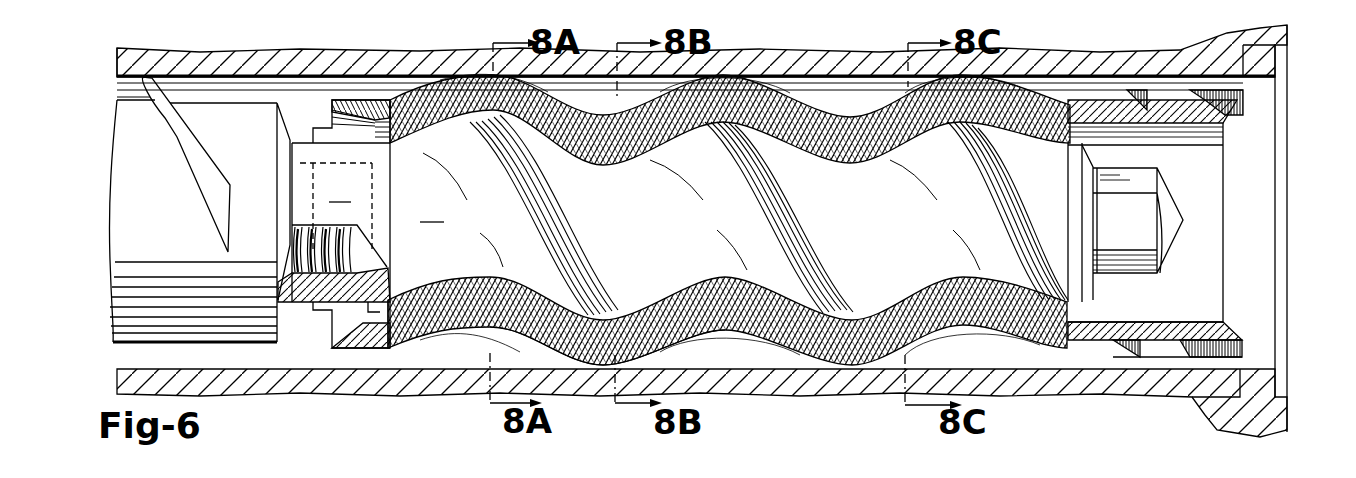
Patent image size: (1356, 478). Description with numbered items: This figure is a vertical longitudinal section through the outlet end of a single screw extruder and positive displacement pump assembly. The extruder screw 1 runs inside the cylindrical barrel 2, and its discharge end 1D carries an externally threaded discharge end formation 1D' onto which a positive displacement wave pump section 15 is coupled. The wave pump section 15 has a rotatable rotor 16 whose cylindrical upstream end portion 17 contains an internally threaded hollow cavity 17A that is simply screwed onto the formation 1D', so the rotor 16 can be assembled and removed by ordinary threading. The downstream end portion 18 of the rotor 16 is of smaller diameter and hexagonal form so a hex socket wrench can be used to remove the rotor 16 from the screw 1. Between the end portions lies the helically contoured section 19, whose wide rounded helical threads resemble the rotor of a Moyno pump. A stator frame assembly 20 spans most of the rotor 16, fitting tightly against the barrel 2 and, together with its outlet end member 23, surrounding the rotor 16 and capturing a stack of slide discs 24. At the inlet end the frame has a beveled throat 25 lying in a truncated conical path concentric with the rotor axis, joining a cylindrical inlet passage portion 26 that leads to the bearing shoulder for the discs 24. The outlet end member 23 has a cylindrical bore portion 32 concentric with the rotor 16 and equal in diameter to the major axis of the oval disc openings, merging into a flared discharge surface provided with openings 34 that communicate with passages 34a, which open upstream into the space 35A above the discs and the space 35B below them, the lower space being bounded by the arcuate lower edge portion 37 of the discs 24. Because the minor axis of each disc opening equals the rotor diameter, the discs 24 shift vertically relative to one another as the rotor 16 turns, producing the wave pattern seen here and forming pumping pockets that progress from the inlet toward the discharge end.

The extruder screw 1 is at (118, 242).
The discharge end 1D is at (205, 99).
The externally threaded discharge end formation 1D' is at (363, 224).
The cylindrical barrel 2 is at (813, 387).
The positive displacement wave pump section 15 is at (764, 46).
The rotor 16 is at (744, 215).
The cylindrical upstream end portion 17 is at (336, 206).
The hollow cavity 17A is at (310, 170).
The downstream end portion 18 is at (1137, 168).
The helically contoured section 19 is at (500, 160).
The stator frame assembly 20 is at (348, 352).
The outlet end member 23 is at (1270, 63).
The stack of slide discs 24 is at (462, 340).
The beveled throat 25 is at (350, 332).
The cylindrical inlet passage portion 26 is at (392, 290).
The cylindrical bore portion 32 is at (1208, 245).
The openings 34 is at (1230, 103).
The passages 34a is at (1178, 95).
The space above disc edges 35A is at (846, 90).
The space below disc edges 35B is at (763, 357).
The lower arcuate edge portion 37 is at (672, 343).